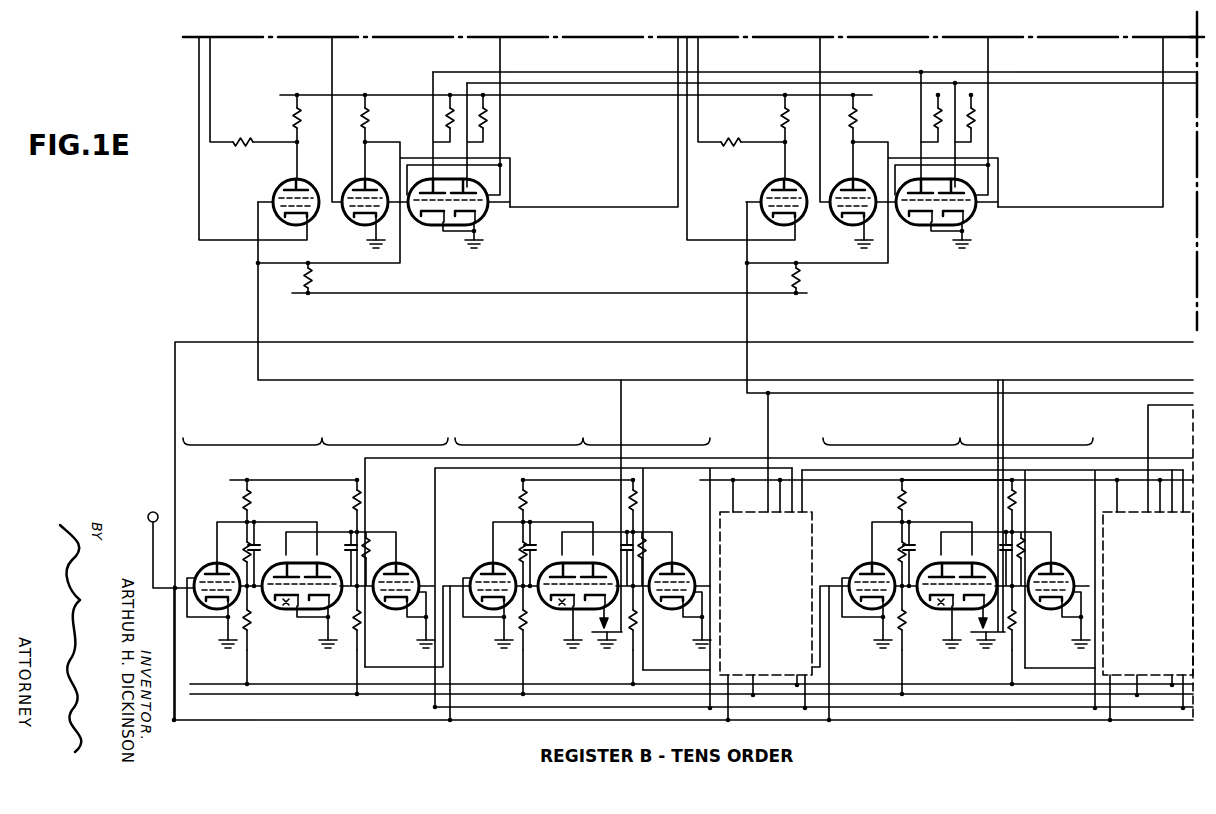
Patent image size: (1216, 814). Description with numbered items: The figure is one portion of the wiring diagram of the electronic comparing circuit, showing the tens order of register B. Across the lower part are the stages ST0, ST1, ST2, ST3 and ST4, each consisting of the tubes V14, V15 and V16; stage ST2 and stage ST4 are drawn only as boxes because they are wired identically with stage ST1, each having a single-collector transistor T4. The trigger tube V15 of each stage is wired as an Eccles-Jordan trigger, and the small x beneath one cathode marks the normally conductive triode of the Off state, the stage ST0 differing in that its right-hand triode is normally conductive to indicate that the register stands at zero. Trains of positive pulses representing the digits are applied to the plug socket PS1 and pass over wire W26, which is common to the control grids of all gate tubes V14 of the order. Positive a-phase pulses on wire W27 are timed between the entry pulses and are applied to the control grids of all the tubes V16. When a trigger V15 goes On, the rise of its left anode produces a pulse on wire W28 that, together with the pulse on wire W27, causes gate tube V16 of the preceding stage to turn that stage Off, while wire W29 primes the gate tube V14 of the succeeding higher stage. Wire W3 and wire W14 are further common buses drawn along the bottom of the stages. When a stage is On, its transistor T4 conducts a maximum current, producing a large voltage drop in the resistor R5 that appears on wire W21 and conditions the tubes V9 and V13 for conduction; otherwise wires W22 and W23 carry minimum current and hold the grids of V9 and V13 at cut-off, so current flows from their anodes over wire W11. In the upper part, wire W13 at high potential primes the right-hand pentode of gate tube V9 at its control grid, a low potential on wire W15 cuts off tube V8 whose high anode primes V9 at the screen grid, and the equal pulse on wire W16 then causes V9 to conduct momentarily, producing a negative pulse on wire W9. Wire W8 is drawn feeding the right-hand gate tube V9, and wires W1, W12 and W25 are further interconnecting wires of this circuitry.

The wire W1 is at (599, 97).
The wire W3 is at (496, 680).
The wire W8 is at (956, 70).
The wire W9 is at (1099, 88).
The wire W11 is at (212, 86).
The wire W12 is at (199, 150).
The wire W13 is at (678, 54).
The wire W14 is at (388, 714).
The wire W15 is at (334, 76).
The wire W16 is at (502, 58).
The wire W21 is at (259, 326).
The wire W22 is at (749, 324).
The wire W23 is at (1148, 424).
The wire W25 is at (578, 340).
The wire W26 is at (258, 722).
The wire W27 is at (516, 710).
The wire W28 is at (365, 461).
The wire W29 is at (421, 668).
The resistor R5 is at (310, 278).
The tube V8 is at (352, 226).
The gate tube V9 is at (441, 227).
The tube V13 is at (279, 190).
The gate tube V14 is at (208, 566).
The trigger tube V15 is at (282, 612).
The gate tube V16 is at (428, 556).
The transistor T4 is at (600, 636).
The plug socket PS1 is at (157, 511).
The stage ST0 is at (315, 431).
The stage ST1 is at (582, 431).
The stage ST2 is at (766, 595).
The stage ST3 is at (958, 431).
The stage ST4 is at (1148, 596).